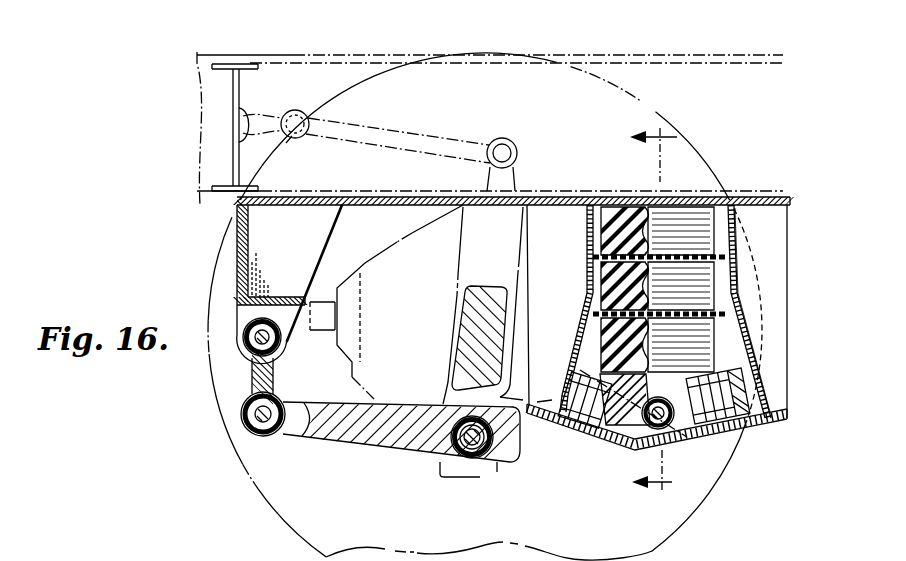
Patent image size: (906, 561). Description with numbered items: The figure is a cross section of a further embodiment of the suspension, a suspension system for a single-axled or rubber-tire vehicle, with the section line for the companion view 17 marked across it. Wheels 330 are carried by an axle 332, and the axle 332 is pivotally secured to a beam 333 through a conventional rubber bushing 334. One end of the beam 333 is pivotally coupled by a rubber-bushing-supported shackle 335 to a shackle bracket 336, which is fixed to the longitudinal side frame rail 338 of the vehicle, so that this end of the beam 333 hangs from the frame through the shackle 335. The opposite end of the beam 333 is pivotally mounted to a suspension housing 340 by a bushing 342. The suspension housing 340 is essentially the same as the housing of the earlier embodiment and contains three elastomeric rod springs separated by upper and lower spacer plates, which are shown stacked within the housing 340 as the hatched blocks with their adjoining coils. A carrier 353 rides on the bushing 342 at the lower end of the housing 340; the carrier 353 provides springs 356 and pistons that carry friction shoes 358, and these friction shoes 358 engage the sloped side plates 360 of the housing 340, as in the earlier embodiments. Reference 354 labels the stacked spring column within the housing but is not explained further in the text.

The wheels 330 is at (258, 496).
The axle 332 is at (470, 322).
The beam 333 is at (417, 453).
The rubber bushing 334 is at (482, 477).
The shackle 335 is at (252, 373).
The shackle bracket 336 is at (237, 245).
The longitudinal side frame rail 338 is at (365, 44).
The suspension housing 340 is at (752, 328).
The bushing 342 is at (667, 442).
The carrier 353 is at (713, 442).
The cartridge housing 354 is at (598, 373).
The springs 356 is at (609, 453).
The friction shoes 358 is at (745, 398).
The sloped side plates 360 is at (740, 360).
The section line 17- 17 is at (648, 313).